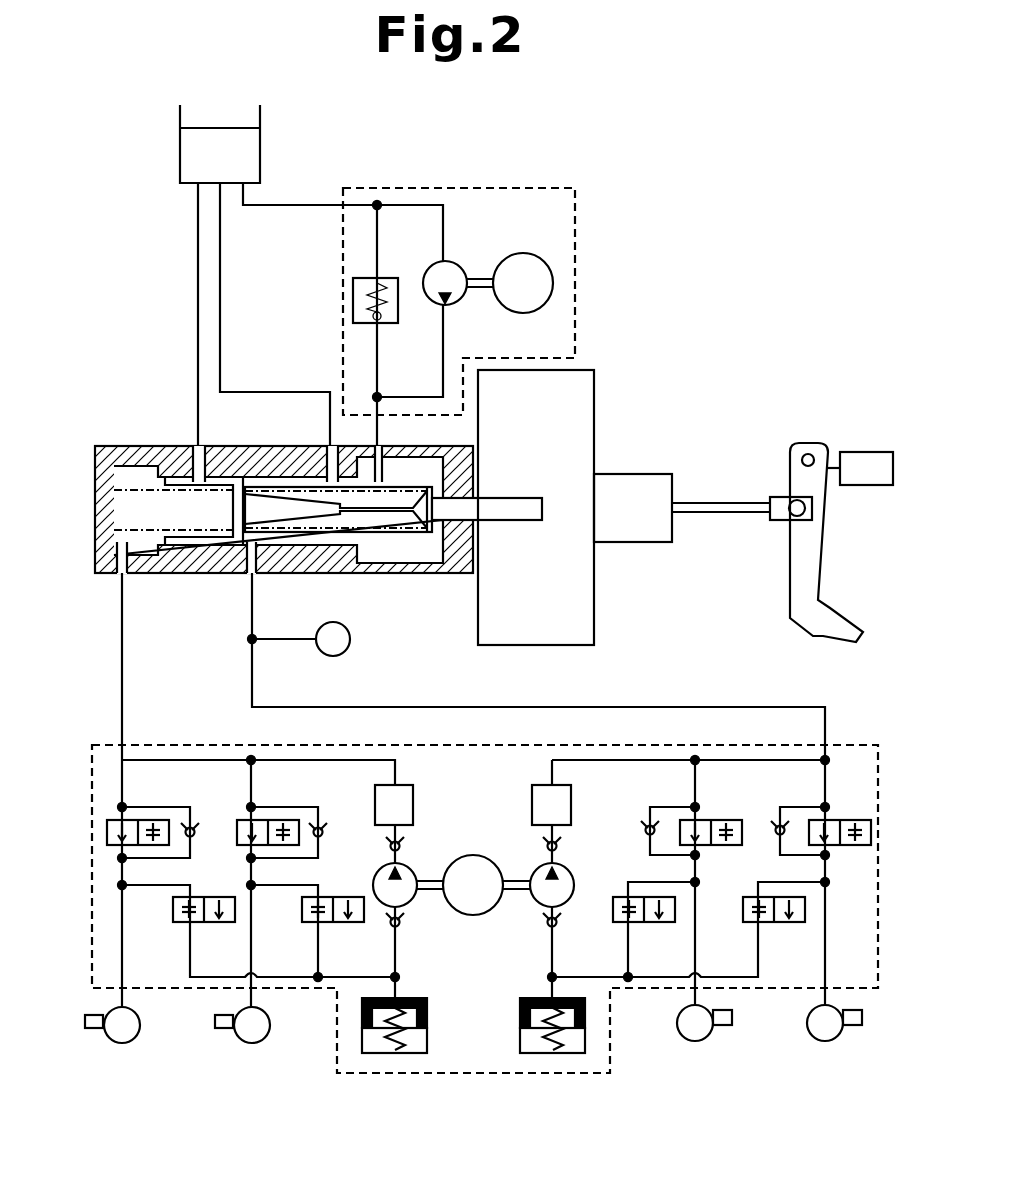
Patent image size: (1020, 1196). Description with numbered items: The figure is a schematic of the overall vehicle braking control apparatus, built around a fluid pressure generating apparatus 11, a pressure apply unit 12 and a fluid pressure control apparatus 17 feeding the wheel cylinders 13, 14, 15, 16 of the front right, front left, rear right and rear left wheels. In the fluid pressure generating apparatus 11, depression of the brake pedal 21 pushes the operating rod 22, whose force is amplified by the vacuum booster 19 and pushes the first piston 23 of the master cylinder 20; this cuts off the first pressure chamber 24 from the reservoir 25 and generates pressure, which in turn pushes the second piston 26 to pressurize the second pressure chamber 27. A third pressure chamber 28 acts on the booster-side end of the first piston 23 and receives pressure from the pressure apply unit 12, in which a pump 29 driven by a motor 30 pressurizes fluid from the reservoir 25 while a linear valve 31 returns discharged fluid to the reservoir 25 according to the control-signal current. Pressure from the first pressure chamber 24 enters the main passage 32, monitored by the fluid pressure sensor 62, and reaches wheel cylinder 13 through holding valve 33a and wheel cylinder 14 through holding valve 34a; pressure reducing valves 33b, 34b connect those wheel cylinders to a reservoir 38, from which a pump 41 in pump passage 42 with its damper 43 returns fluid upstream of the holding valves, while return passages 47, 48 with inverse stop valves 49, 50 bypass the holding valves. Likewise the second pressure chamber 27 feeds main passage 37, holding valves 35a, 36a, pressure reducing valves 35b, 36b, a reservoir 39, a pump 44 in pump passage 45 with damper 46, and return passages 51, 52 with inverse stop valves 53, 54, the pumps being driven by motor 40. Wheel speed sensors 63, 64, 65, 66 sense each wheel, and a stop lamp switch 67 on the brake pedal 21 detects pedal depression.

The fluid pressure generating apparatus 11 is at (606, 363).
The pressure apply unit 12 is at (426, 258).
The wheel cylinder 13 is at (825, 1042).
The wheel cylinder 14 is at (695, 1042).
The wheel cylinder 15 is at (122, 1044).
The wheel cylinder 16 is at (252, 1044).
The fluid pressure control apparatus 17 is at (673, 742).
The vacuum booster 19 is at (596, 403).
The master cylinder 20 is at (318, 497).
The brake pedal 21 is at (826, 548).
The operating rod 22 is at (721, 516).
The first piston 23 is at (430, 547).
The first pressure chamber 24 is at (285, 507).
The reservoir 25 is at (262, 134).
The second piston 26 is at (205, 545).
The second pressure chamber 27 is at (140, 517).
The third pressure chamber 28 is at (385, 547).
The pump 29 is at (458, 268).
The motor 30 is at (540, 255).
The linear valve 31 is at (352, 298).
The main passage 32 is at (252, 684).
The holding valve 33a is at (862, 825).
The pressure reducing valve 33b is at (742, 912).
The holding valve 34a is at (708, 803).
The pressure reducing valve 34b is at (613, 912).
The holding valve 35a is at (99, 806).
The pressure reducing valve 35b is at (173, 912).
The holding valve 36a is at (247, 806).
The pressure reducing valve 36b is at (350, 924).
The main passage 37 is at (122, 674).
The reservoir 38 is at (584, 1053).
The reservoir 39 is at (364, 1053).
The motor 40 is at (473, 916).
The pump 41 is at (534, 862).
The pump passage 42 is at (551, 765).
The damper 43 is at (531, 797).
The pump 44 is at (373, 882).
The pump passage 45 is at (398, 765).
The damper 46 is at (414, 803).
The return passage 47 is at (808, 818).
The return passage 48 is at (668, 818).
The inverse stop valve 49 is at (777, 838).
The inverse stop valve 50 is at (645, 836).
The return passage 51 is at (157, 818).
The return passage 52 is at (290, 818).
The inverse stop valve 53 is at (196, 838).
The inverse stop valve 54 is at (323, 825).
The fluid pressure sensor 62 is at (349, 648).
The wheel speed sensor 63 is at (854, 1026).
The wheel speed sensor 64 is at (724, 1026).
The wheel speed sensor 65 is at (90, 1029).
The wheel speed sensor 66 is at (220, 1029).
The stop lamp switch 67 is at (867, 450).